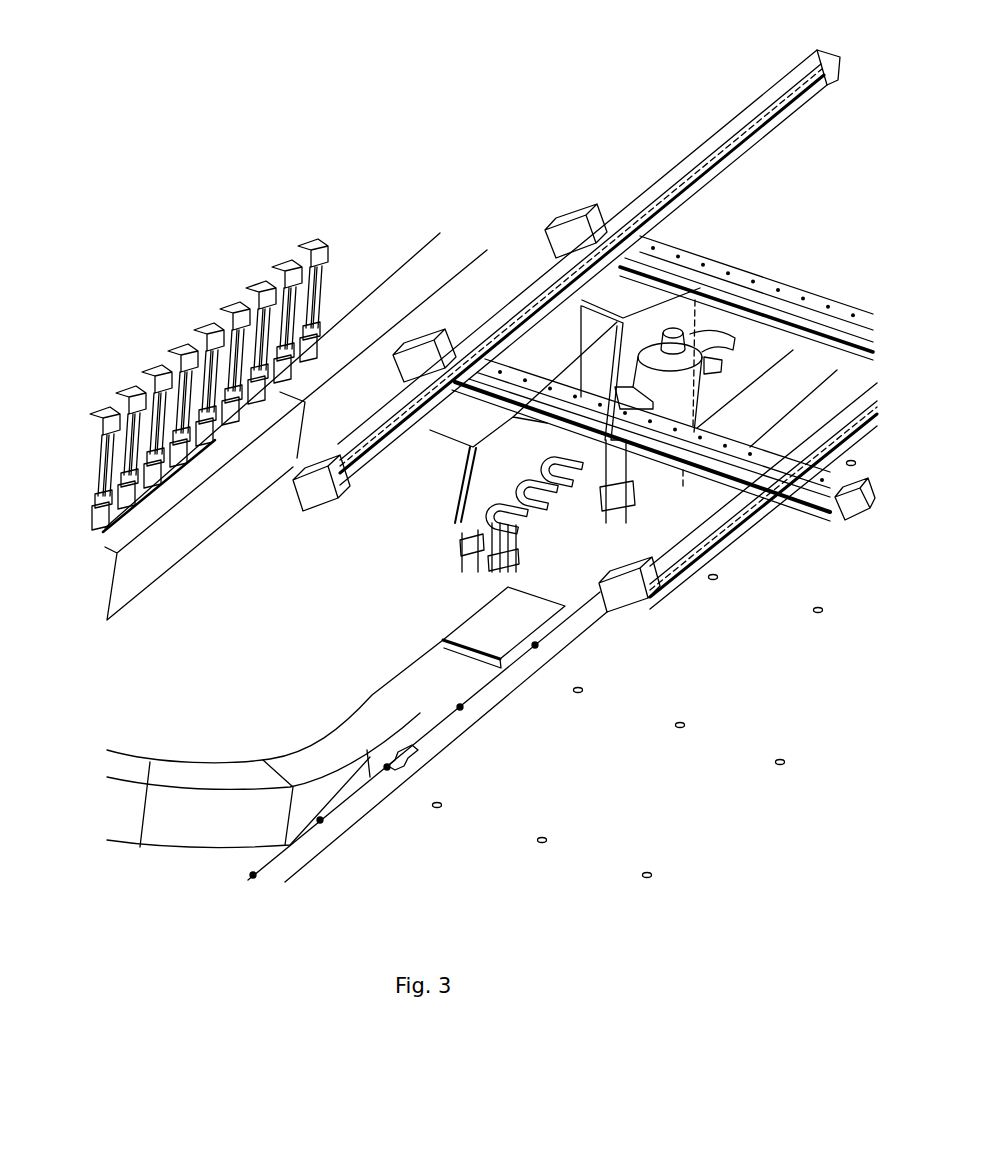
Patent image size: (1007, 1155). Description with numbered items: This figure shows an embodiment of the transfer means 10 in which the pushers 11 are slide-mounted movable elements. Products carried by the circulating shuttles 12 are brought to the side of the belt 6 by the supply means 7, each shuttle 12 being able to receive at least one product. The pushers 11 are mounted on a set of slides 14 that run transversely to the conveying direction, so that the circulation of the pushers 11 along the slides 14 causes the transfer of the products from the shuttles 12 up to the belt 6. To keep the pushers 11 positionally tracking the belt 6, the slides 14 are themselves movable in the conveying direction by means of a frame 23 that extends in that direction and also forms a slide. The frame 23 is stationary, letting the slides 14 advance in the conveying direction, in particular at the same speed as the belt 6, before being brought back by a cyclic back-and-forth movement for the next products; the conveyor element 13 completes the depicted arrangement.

The belt 6 is at (693, 796).
The supply means 7 is at (579, 375).
The transfer means 10 is at (557, 279).
The pusher 11 is at (490, 447).
The shuttle 12 is at (190, 283).
The conveyor belt 13 is at (163, 870).
The slide 14 is at (540, 378).
The frame 23 is at (483, 333).